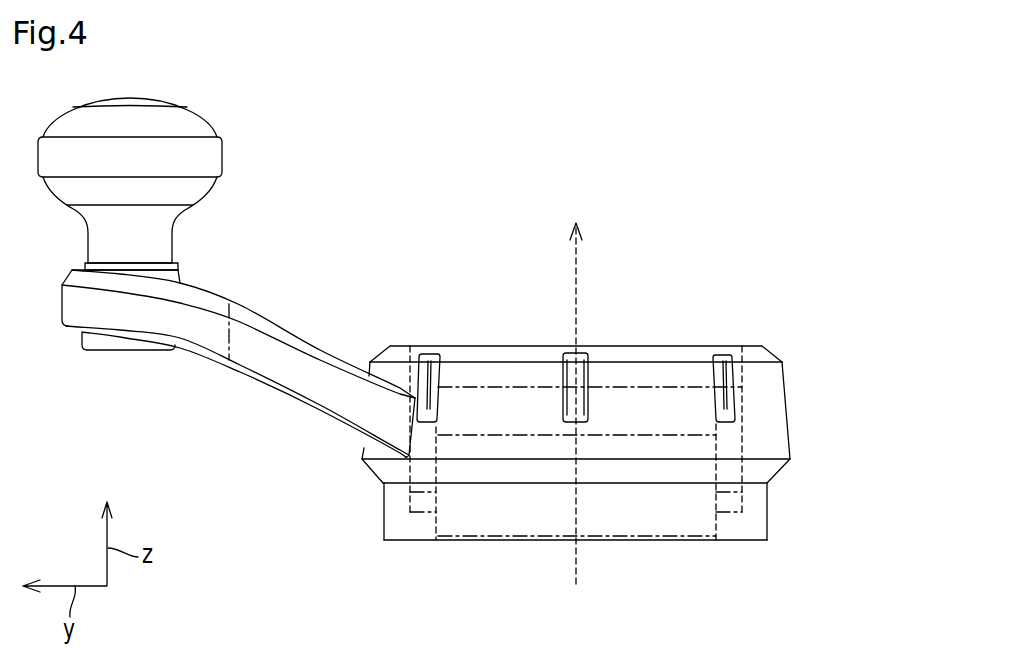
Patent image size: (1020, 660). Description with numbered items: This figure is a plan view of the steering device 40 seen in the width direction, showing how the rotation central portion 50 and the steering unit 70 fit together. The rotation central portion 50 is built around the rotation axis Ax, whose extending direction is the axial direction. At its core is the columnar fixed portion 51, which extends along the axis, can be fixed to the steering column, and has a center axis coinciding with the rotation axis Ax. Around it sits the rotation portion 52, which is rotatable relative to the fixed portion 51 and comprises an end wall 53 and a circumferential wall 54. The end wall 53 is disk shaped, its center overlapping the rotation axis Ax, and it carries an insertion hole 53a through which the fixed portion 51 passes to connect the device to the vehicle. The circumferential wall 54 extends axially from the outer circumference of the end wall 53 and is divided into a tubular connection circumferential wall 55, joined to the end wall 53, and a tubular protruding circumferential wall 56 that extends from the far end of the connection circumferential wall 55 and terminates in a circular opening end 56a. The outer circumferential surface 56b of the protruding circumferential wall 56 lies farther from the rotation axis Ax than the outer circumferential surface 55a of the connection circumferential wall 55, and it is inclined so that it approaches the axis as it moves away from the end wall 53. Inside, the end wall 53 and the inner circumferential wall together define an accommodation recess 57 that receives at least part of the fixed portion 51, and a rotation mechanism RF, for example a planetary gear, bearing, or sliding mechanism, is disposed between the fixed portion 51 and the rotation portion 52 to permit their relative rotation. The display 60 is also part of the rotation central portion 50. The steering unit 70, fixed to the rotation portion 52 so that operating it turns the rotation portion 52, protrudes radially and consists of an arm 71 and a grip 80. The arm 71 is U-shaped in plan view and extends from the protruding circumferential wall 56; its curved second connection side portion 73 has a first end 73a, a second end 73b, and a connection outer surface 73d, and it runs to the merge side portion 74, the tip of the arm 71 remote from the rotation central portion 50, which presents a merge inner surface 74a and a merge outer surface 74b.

The steering device 40 is at (719, 99).
The rotation central portion 50 is at (787, 243).
The fixed portion 51 is at (605, 507).
The rotation portion 52 is at (773, 348).
The end wall 53 is at (730, 527).
The insertion hole 53a is at (712, 523).
The circumferential wall 54 is at (868, 458).
The connection circumferential wall 55 is at (768, 507).
The outer circumferential surface of the connection circumferential wall 55a is at (383, 512).
The protruding circumferential wall 56 is at (785, 447).
The opening end 56a is at (742, 350).
The outer circumferential surface of the protruding circumferential wall 56b is at (362, 450).
The accommodation recess 57 is at (742, 381).
The display 60 is at (640, 400).
The steering unit 70 is at (329, 113).
The arm 71 is at (367, 259).
The second connection side portion 73 is at (275, 363).
The first end 73a is at (447, 357).
The second end 73b is at (220, 332).
The connection outer surface 73d is at (305, 365).
The merge side portion 74 is at (128, 312).
The merge inner surface 74a is at (244, 328).
The merge outer surface 74b is at (60, 300).
The grip 80 is at (68, 152).
The rotation mechanism RF is at (418, 515).
The rotation axis Ax is at (580, 265).